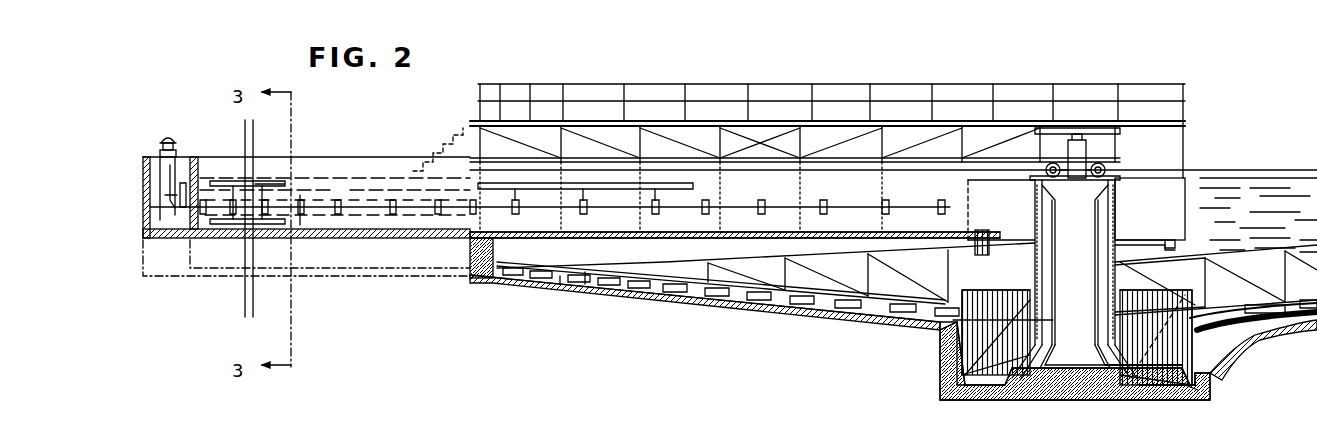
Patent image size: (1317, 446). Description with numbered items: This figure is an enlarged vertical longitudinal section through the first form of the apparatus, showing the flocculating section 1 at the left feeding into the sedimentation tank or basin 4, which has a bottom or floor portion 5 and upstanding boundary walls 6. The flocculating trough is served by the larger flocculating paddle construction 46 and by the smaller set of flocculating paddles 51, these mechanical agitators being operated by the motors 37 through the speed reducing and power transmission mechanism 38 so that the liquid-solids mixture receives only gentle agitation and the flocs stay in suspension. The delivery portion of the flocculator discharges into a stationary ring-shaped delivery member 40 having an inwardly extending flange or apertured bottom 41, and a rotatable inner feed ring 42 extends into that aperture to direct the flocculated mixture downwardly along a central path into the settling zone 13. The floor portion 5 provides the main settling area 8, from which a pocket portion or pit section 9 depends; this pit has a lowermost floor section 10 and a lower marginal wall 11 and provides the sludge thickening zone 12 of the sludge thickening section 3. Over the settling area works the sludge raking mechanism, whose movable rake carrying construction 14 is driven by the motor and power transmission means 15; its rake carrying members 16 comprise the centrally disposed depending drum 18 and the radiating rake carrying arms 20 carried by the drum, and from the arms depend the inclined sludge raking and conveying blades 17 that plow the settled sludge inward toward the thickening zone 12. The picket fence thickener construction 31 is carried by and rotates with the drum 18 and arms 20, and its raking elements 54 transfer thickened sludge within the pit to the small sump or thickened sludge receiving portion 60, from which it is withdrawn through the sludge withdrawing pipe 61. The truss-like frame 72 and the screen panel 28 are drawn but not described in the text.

The flocculating section 1 is at (360, 183).
The sludge thickening section 3 is at (947, 358).
The sedimentation tank or basin 4 is at (1258, 215).
The bottom or floor portion 5 is at (736, 302).
The upstanding boundary walls 6 is at (470, 278).
The main settling area 8 is at (672, 292).
The pocket portion or pit section 9 is at (1202, 383).
The lowermost floor section 10 is at (1060, 402).
The lower marginal wall 11 is at (940, 328).
The sludge thickening zone 12 is at (1156, 337).
The settling zone 13 is at (893, 210).
The movable rake carrying construction 14 is at (1115, 195).
The motor and speed reducing and power transmission means 15 is at (1100, 165).
The rake carrying members 16 is at (626, 276).
The sludge raking and conveying blades 17 is at (596, 284).
The depending drum or cage 18 is at (1117, 226).
The rake carrying arms 20 is at (815, 298).
The screen panel 28 is at (975, 385).
The picket fence thickener construction 31 is at (1160, 395).
The motors 37 is at (170, 143).
The speed reducing and power transmission mechanism 38 is at (192, 176).
The stationary ring-shaped delivery member 40 is at (1188, 188).
The inwardly extending flange or apertured bottom 41 is at (1172, 248).
The rotatable inner feed ring 42 is at (985, 266).
The larger flocculating paddle construction 46 is at (683, 238).
The smaller set of flocculating paddles 51 is at (316, 218).
The raking elements 54 is at (1145, 388).
The small sump or thickened sludge receiving portion 60 is at (1190, 388).
The sludge withdrawing pipe or conduit 61 is at (1250, 325).
The rake truss 72 is at (1206, 262).